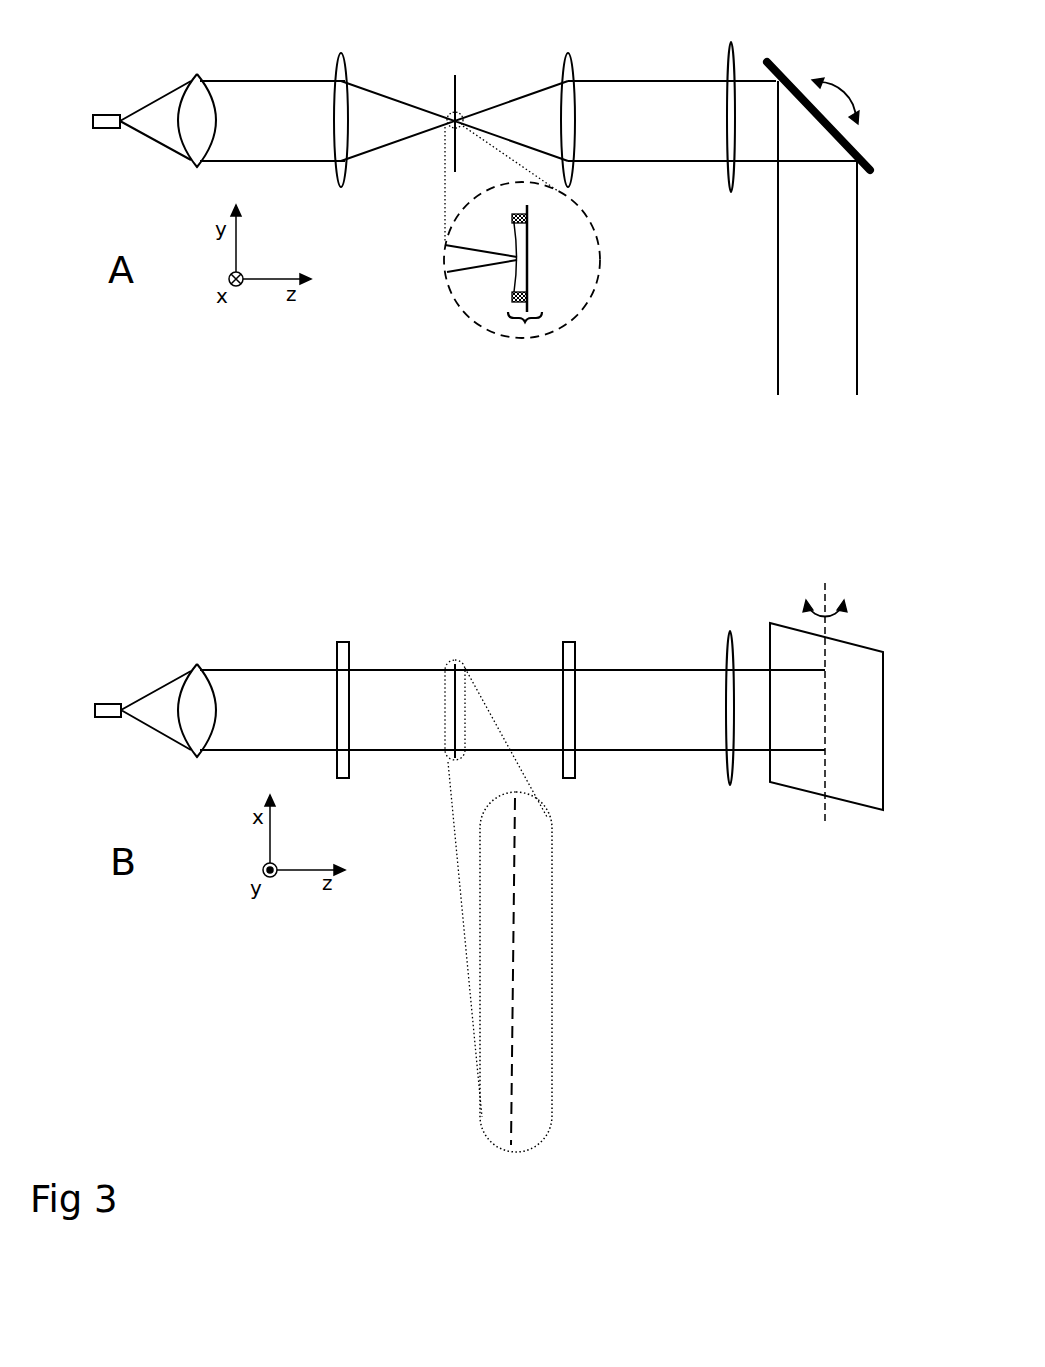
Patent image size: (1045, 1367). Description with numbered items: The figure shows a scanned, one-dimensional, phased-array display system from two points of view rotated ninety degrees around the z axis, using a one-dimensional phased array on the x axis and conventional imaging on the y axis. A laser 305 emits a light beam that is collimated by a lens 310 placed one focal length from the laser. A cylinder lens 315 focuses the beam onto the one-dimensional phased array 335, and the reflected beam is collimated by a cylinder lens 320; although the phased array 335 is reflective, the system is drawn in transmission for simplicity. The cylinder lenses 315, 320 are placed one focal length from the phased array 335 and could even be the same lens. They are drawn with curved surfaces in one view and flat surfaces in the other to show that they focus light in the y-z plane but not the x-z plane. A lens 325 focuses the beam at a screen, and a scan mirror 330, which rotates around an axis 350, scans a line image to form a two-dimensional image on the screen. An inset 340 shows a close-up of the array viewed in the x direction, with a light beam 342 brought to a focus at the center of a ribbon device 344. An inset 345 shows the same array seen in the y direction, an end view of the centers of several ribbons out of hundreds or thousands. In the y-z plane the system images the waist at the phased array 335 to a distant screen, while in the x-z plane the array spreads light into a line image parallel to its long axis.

In FIG. 3A, the laser 305 is at (112, 110).
In FIG. 3B, the laser 305 is at (112, 700).
In FIG. 3A, the lens 310 is at (194, 90).
In FIG. 3B, the lens 310 is at (196, 678).
In FIG. 3A, the cylinder lens 315 is at (340, 68).
In FIG. 3B, the cylinder lens 315 is at (340, 651).
In FIG. 3A, the cylinder lens 320 is at (566, 66).
In FIG. 3B, the cylinder lens 320 is at (566, 650).
In FIG. 3A, the lens 325 is at (729, 60).
In FIG. 3B, the lens 325 is at (729, 646).
In FIG. 3A, the scan mirror 330 is at (800, 88).
In FIG. 3B, the scan mirror 330 is at (868, 657).
In FIG. 3A, the one-dimensional phased array 335 is at (452, 100).
In FIG. 3B, the one-dimensional phased array 335 is at (452, 682).
In FIG. 3A, the inset 340 is at (480, 325).
In FIG. 3A, the light beam 342 is at (467, 265).
In FIG. 3A, the ribbon device 344 is at (523, 323).
In FIG. 3B, the inset 345 is at (548, 918).
In FIG. 3B, the axis 350 is at (823, 815).